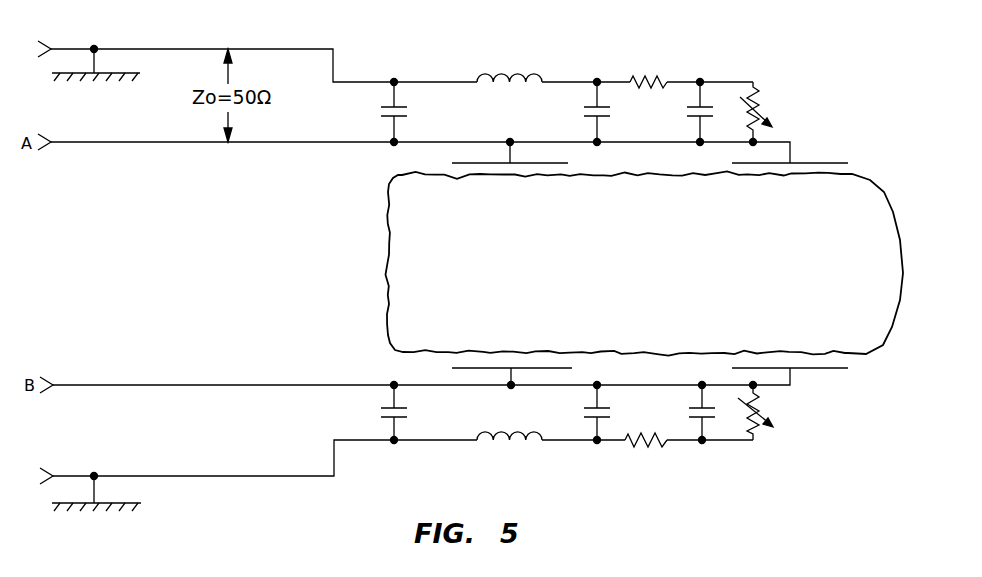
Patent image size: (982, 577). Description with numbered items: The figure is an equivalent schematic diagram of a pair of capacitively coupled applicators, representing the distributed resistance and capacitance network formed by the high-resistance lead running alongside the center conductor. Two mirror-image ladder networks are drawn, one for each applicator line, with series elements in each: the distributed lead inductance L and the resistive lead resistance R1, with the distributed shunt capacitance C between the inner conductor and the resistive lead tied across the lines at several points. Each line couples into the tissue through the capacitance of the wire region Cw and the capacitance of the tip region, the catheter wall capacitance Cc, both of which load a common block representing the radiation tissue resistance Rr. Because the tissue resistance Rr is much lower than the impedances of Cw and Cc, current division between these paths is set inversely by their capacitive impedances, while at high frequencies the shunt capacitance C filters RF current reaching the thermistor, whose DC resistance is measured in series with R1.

The distributed shunt capacitance C is at (556, 261).
The distributed lead inductance L is at (520, 73).
The resistive lead resistance R1 is at (650, 77).
The wire region capacitance Cw is at (494, 264).
The catheter wall capacitance Cc is at (806, 264).
The radiation tissue resistance Rr is at (645, 263).